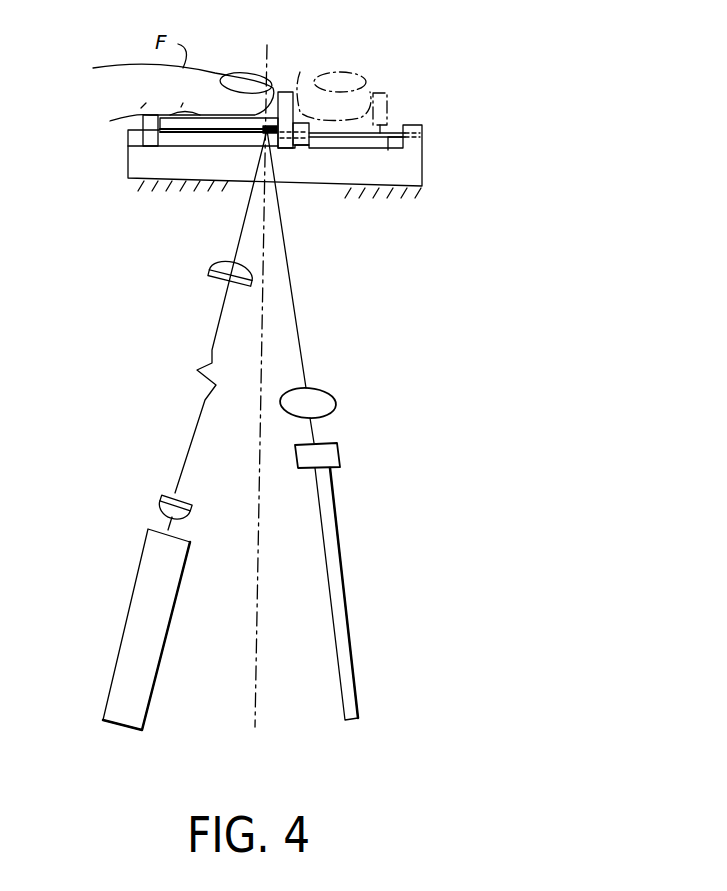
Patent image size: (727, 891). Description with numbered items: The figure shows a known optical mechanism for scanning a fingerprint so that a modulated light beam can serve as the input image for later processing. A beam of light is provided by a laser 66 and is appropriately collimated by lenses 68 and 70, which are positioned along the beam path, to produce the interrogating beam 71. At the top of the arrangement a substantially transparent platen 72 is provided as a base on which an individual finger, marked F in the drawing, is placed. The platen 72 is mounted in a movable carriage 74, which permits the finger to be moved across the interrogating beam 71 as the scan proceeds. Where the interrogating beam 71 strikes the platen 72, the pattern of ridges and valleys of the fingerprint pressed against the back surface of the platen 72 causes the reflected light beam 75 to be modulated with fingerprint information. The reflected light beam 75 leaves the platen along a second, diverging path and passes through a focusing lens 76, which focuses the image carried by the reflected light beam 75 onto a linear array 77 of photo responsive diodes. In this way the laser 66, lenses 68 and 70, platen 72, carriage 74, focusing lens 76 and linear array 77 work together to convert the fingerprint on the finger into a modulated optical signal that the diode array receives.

The laser 66 is at (127, 627).
The lens 68 is at (152, 507).
The lens 70 is at (220, 282).
The interrogating beam 71 is at (240, 227).
The platen 72 is at (193, 130).
The movable carriage 74 is at (277, 145).
The reflected light beam 75 is at (305, 347).
The focusing lens 76 is at (338, 400).
The linear array of photo responsive diodes 77 is at (340, 457).